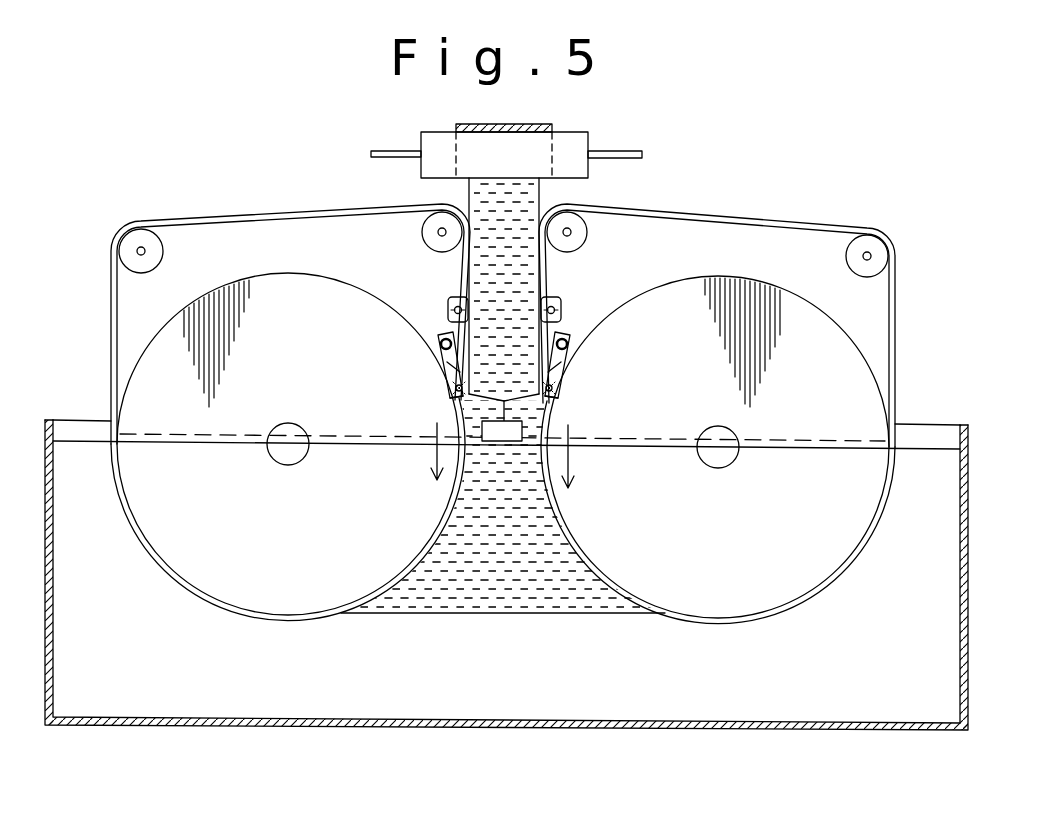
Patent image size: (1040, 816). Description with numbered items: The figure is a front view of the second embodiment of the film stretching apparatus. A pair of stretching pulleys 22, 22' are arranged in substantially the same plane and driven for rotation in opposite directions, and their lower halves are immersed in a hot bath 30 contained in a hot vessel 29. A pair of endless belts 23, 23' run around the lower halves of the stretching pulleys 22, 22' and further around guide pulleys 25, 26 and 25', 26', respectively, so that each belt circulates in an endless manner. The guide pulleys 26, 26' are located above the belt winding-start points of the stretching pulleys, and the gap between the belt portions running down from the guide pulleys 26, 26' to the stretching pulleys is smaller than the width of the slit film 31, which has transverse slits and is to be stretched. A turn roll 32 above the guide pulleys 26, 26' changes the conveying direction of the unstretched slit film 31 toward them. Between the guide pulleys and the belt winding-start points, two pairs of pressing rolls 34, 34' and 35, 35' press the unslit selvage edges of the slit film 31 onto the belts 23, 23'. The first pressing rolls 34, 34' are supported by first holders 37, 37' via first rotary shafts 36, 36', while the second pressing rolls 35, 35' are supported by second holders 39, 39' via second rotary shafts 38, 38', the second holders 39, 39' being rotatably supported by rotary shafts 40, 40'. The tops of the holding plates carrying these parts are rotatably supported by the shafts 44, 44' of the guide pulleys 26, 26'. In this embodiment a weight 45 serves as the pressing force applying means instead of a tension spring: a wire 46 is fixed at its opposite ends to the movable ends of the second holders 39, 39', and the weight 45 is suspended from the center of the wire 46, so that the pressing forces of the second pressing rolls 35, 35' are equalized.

The stretching pulley 22 is at (252, 444).
The stretching pulley 22' is at (757, 447).
The endless belt 23 is at (257, 412).
The endless belt 23' is at (753, 414).
The guide pulley 25 is at (136, 221).
The guide pulley 25' is at (904, 223).
The guide pulley 26 is at (389, 210).
The guide pulley 26' is at (628, 210).
The hot vessel 29 is at (968, 556).
The hot bath 30 is at (928, 448).
The slit film 31 is at (480, 124).
The turn roll 32 is at (582, 140).
The first pressing roll 34 is at (422, 271).
The first pressing roll 34' is at (586, 277).
The second pressing roll 35 is at (405, 406).
The second pressing roll 35' is at (610, 389).
The first rotary shaft 36 is at (424, 292).
The first rotary shaft 36' is at (585, 296).
The first holder 37 is at (403, 311).
The first holder 37' is at (613, 313).
The second rotary shaft 38 is at (404, 389).
The second rotary shaft 38' is at (611, 412).
The second holder 39 is at (402, 363).
The second holder 39' is at (612, 364).
The rotary shaft 40 is at (403, 359).
The rotary shaft 40' is at (611, 361).
The shaft of guide pulley 44 is at (410, 202).
The shaft of guide pulley 44' is at (604, 202).
The weight 45 is at (497, 436).
The wire 46 is at (524, 402).